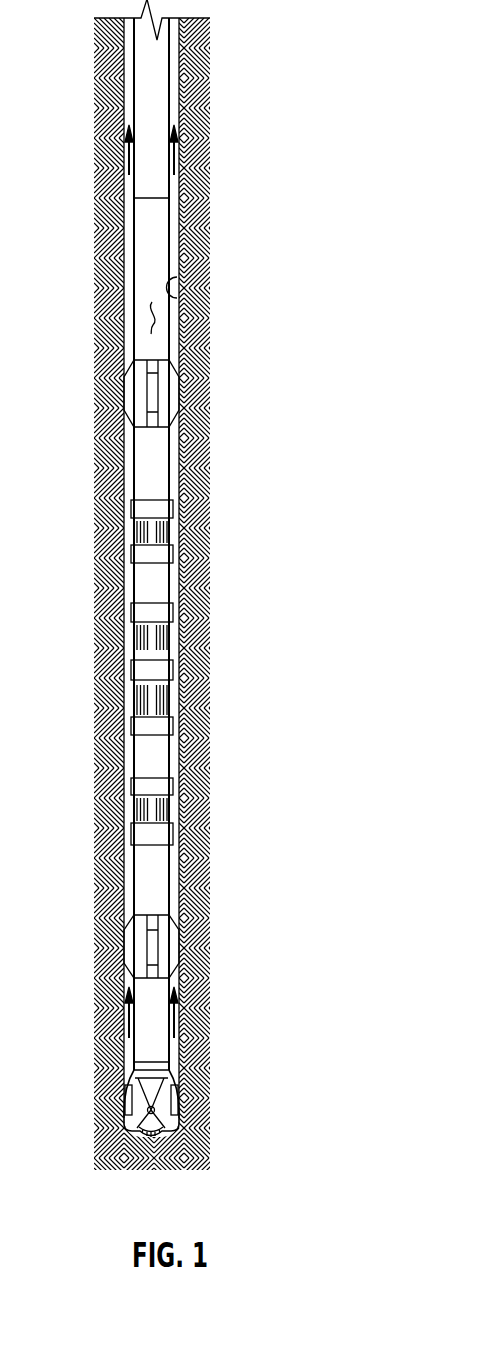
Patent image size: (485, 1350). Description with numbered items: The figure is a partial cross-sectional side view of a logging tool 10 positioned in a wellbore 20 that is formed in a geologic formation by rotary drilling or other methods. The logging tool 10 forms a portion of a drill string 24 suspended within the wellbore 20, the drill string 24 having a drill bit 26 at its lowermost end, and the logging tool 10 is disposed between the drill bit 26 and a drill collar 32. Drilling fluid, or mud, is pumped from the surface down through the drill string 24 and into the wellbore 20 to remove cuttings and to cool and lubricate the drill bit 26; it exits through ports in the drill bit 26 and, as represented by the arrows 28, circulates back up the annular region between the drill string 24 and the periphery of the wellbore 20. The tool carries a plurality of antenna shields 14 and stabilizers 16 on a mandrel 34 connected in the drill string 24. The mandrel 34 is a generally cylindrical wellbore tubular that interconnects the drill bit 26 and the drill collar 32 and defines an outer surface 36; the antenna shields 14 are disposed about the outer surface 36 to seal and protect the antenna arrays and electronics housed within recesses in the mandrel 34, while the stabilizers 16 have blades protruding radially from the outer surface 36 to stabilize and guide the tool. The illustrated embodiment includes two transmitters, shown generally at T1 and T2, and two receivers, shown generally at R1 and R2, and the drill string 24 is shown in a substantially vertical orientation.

The logging tool 10 is at (181, 462).
The antenna shields 14 is at (133, 537).
The stabilizers 16 is at (173, 400).
The wellbore 20 is at (182, 281).
The drill string 24 is at (168, 223).
The drill bit 26 is at (170, 1102).
The arrows 28 is at (128, 143).
The drill collar 32 is at (163, 75).
The mandrel 34 is at (163, 250).
The outer surface 36 is at (157, 316).
The first transmitter T1 is at (181, 532).
The first receiver R1 is at (181, 637).
The second receiver R2 is at (181, 700).
The second transmitter T2 is at (181, 807).